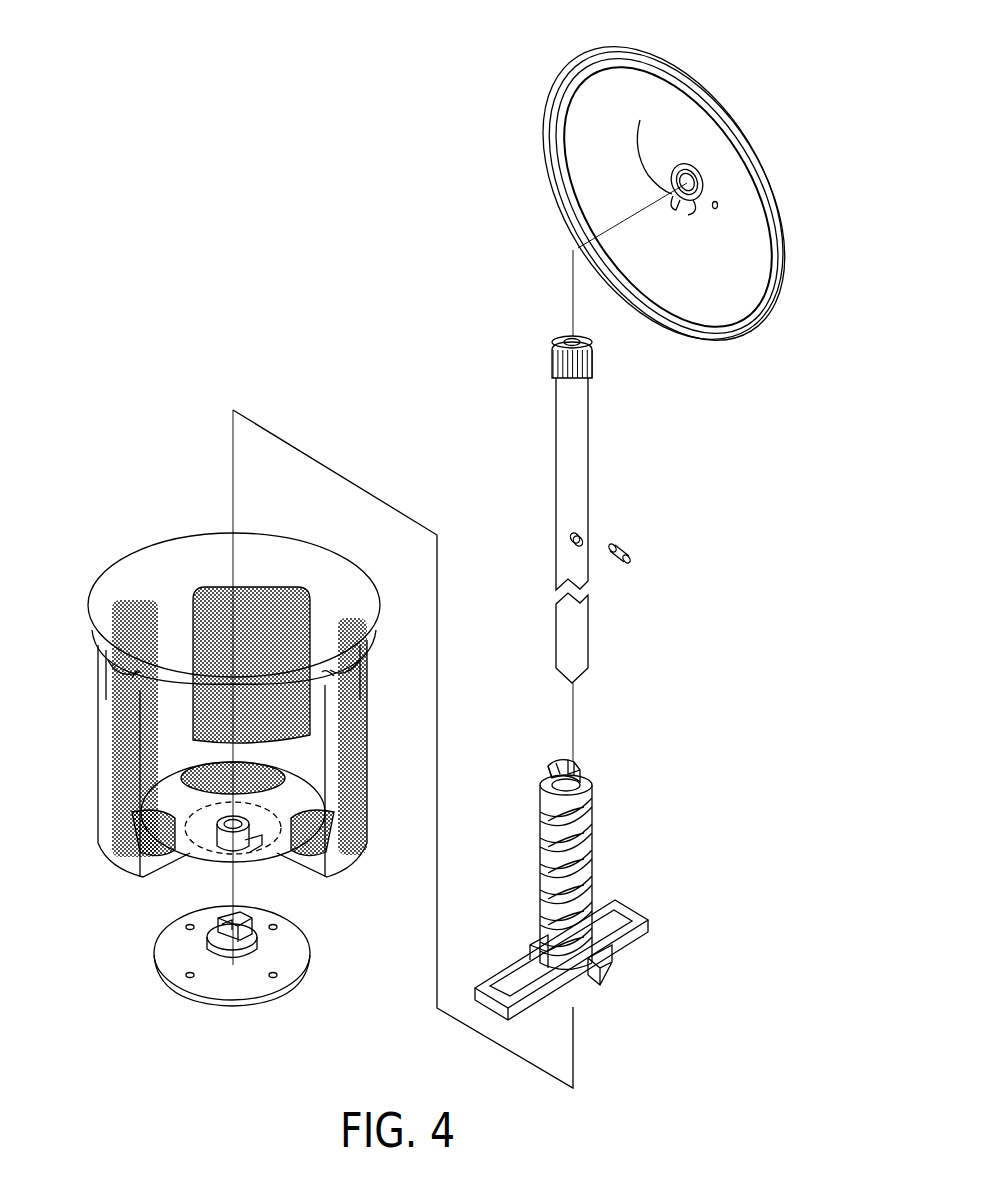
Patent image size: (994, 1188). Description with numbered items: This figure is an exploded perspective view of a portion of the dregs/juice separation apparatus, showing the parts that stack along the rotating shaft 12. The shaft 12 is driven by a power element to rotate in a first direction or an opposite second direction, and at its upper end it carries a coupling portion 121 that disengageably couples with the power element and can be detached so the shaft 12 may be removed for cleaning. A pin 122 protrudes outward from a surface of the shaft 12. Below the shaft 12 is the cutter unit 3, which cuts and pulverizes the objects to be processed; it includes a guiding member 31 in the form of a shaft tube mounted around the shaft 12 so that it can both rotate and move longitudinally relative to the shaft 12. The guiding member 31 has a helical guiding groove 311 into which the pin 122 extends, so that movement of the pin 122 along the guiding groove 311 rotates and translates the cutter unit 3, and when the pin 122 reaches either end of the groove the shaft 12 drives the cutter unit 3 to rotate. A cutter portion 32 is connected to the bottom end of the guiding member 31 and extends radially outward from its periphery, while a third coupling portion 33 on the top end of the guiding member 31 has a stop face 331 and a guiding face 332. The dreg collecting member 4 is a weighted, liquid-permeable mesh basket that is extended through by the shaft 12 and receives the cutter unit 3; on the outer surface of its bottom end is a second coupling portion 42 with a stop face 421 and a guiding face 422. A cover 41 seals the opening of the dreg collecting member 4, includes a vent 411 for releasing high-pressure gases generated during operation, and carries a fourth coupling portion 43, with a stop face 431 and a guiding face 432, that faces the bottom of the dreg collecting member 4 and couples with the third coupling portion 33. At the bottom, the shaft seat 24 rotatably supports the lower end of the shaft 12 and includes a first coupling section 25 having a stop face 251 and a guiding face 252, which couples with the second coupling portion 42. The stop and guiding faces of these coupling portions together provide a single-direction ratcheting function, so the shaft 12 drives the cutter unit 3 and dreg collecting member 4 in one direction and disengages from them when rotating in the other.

The dreg collecting member 4 is at (226, 700).
The cover 41 is at (647, 192).
The vent 411 is at (725, 132).
The fourth coupling portion 43 is at (680, 212).
The stop face 431 is at (640, 120).
The guiding face 432 is at (717, 202).
The shaft 12 is at (626, 509).
The coupling portion 121 is at (595, 360).
The pin 122 is at (628, 557).
The cutter unit 3 is at (577, 862).
The guiding member 31 is at (523, 872).
The guiding groove 311 is at (548, 846).
The cutter portion 32 is at (632, 912).
The third coupling portion 33 is at (572, 743).
The stop face 331 is at (590, 769).
The guiding face 332 is at (558, 768).
The second coupling portion 42 is at (241, 867).
The stop face 421 is at (265, 845).
The guiding face 422 is at (205, 858).
The shaft seat 24 is at (227, 990).
The first coupling section 25 is at (223, 993).
The stop face 251 is at (244, 946).
The guiding face 252 is at (222, 924).